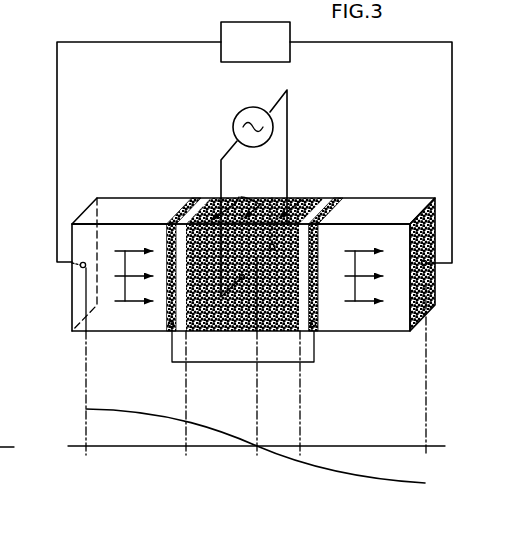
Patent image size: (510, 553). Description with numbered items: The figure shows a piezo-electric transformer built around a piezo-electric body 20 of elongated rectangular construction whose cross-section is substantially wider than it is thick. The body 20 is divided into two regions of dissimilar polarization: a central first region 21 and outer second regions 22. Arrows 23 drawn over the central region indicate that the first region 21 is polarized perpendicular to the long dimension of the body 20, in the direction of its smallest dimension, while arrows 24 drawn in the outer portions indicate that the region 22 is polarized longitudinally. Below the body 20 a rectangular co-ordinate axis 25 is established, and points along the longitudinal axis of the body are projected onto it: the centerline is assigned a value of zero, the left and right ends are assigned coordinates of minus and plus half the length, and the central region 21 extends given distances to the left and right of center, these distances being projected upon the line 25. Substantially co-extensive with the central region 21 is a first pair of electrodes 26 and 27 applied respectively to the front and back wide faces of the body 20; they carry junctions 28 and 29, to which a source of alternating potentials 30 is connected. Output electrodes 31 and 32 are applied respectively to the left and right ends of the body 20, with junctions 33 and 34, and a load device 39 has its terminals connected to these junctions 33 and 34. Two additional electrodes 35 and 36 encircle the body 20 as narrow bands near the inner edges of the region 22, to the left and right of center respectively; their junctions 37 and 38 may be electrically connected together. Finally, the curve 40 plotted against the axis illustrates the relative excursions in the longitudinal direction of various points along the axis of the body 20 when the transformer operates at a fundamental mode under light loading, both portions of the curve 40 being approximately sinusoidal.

The piezo-electric body 20 is at (147, 184).
The first region 21 is at (320, 207).
The second region 22 is at (110, 200).
The arrows 23 is at (236, 199).
The arrows 24 is at (133, 252).
The rectangular co-ordinate axis 25 is at (434, 447).
The first electrode 26 is at (281, 322).
The first electrode 27 is at (305, 196).
The junction 28 is at (241, 280).
The junction 29 is at (273, 214).
The source of alternating potentials 30 is at (233, 125).
The output electrode 31 is at (77, 291).
The output electrode 32 is at (428, 290).
The junction 33 is at (78, 267).
The junction 34 is at (427, 266).
The additional electrode 35 is at (183, 208).
The additional electrode 36 is at (336, 208).
The junction 37 is at (168, 325).
The junction 38 is at (316, 325).
The load device 39 is at (291, 56).
The curve 40 is at (384, 477).